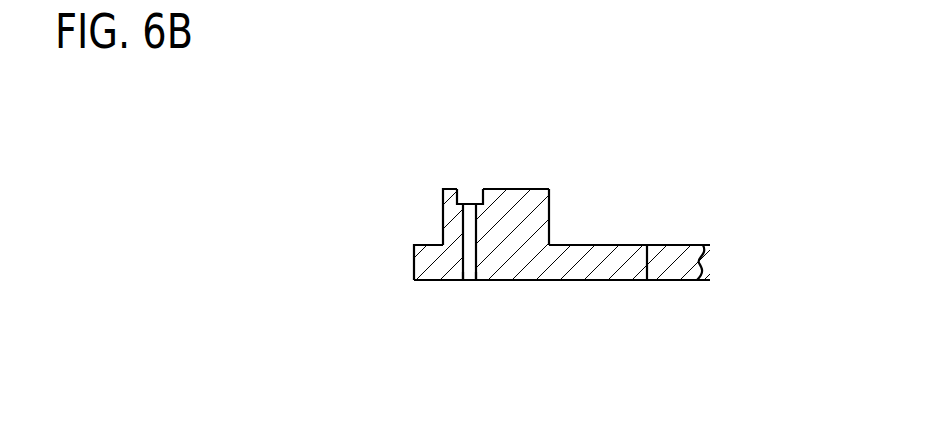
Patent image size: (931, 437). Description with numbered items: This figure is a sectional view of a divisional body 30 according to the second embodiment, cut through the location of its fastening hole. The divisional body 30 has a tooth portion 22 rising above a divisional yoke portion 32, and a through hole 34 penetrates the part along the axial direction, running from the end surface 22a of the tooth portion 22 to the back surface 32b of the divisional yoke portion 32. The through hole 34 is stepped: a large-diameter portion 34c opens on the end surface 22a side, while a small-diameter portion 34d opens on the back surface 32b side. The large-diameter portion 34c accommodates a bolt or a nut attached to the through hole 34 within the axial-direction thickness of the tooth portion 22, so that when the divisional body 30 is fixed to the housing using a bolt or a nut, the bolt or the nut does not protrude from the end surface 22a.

The divisional body 30 is at (736, 145).
The tooth portion 22 is at (512, 202).
The end surface 22a is at (533, 188).
The divisional yoke portion 32 is at (638, 279).
The back surface 32b is at (567, 280).
The through hole 34 is at (480, 229).
The large-diameter portion 34c is at (457, 203).
The small-diameter portion 34d is at (463, 270).